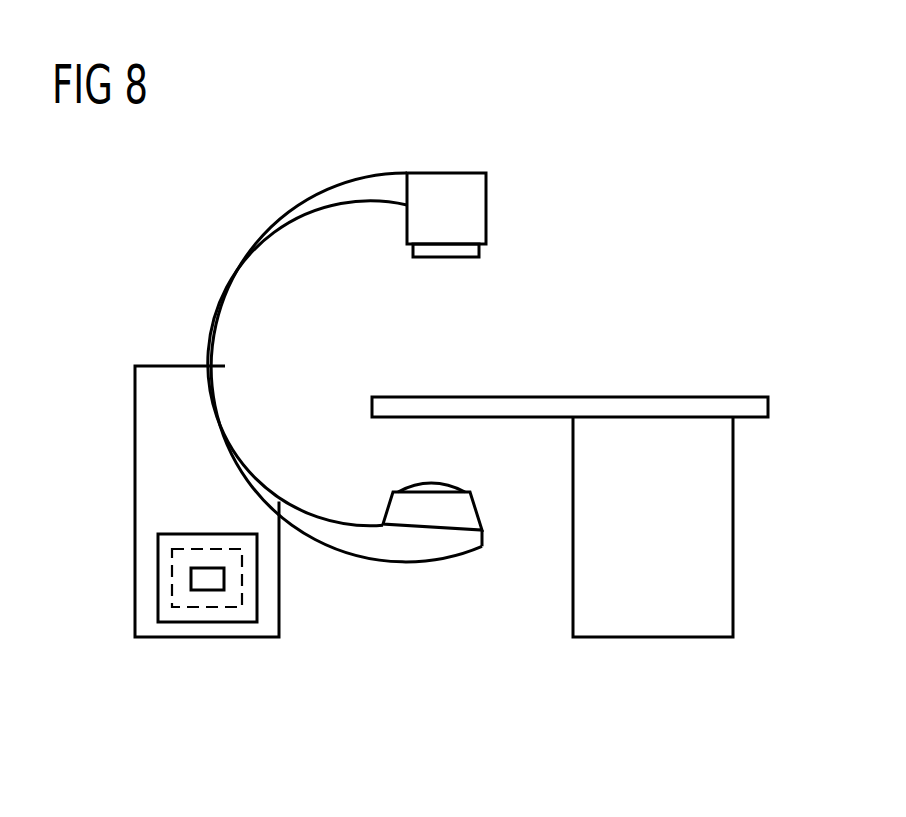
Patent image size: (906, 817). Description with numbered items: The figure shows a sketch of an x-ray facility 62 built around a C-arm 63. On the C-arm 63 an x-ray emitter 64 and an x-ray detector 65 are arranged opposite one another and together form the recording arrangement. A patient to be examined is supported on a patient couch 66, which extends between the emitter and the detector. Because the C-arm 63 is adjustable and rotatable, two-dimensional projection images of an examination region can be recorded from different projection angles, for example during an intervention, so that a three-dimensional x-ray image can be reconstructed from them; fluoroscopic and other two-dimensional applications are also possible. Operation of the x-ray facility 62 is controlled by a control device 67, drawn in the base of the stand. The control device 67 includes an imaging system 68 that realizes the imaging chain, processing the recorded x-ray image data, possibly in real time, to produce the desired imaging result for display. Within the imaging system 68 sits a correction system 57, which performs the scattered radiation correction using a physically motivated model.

The x-ray facility 62 is at (654, 176).
The C-arm 63 is at (247, 277).
The x-ray emitter 64 is at (486, 208).
The x-ray detector 65 is at (481, 505).
The patient couch 66 is at (488, 397).
The control device 67 is at (208, 622).
The imaging system 68 is at (182, 560).
The correction system 57 is at (198, 578).